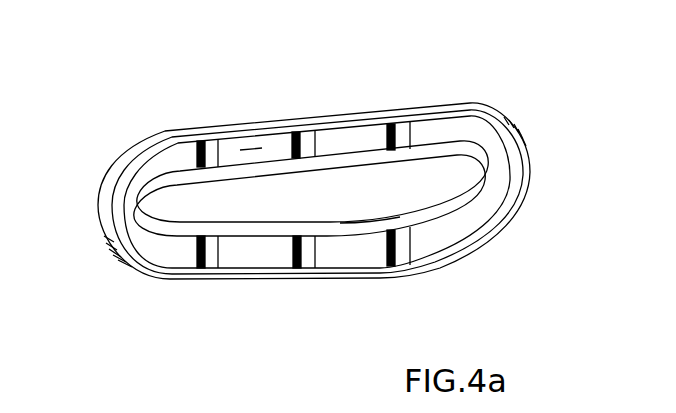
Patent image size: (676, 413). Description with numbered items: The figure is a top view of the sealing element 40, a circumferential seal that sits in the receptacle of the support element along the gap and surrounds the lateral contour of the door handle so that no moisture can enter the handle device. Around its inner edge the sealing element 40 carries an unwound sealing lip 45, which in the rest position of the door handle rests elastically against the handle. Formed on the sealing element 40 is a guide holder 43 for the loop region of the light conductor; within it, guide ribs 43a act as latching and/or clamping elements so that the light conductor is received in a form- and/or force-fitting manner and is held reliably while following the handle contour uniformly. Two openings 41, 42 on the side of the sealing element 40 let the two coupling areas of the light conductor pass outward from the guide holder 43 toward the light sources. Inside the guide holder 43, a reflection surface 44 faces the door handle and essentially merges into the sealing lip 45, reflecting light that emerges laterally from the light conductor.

The sealing element 40 is at (508, 178).
The opening 41 is at (112, 242).
The opening 42 is at (518, 130).
The guide holder 43 is at (250, 149).
The guide ribs 43a is at (398, 128).
The reflection surface 44 is at (431, 143).
The sealing lip 45 is at (442, 212).